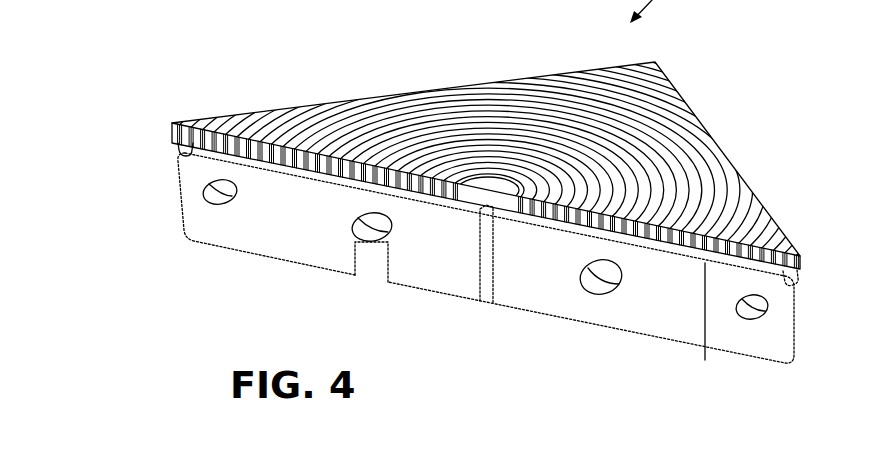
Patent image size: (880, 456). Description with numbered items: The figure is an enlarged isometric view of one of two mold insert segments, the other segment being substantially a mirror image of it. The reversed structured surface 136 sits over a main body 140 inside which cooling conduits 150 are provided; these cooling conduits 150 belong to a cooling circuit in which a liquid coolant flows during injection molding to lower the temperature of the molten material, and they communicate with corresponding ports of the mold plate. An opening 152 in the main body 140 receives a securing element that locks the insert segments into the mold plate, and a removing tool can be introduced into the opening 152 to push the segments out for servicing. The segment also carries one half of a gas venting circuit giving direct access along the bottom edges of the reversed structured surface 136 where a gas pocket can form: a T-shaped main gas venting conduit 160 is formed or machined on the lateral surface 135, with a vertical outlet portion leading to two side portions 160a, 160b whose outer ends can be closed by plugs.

The lateral surface 135 is at (442, 284).
The reversed structured surface 136 is at (716, 144).
The main body 140 is at (281, 240).
The cooling conduits 150 is at (220, 200).
The opening 152 is at (377, 265).
The main gas venting conduit 160 is at (478, 241).
The side portion 160a is at (208, 155).
The side portion 160b is at (705, 360).